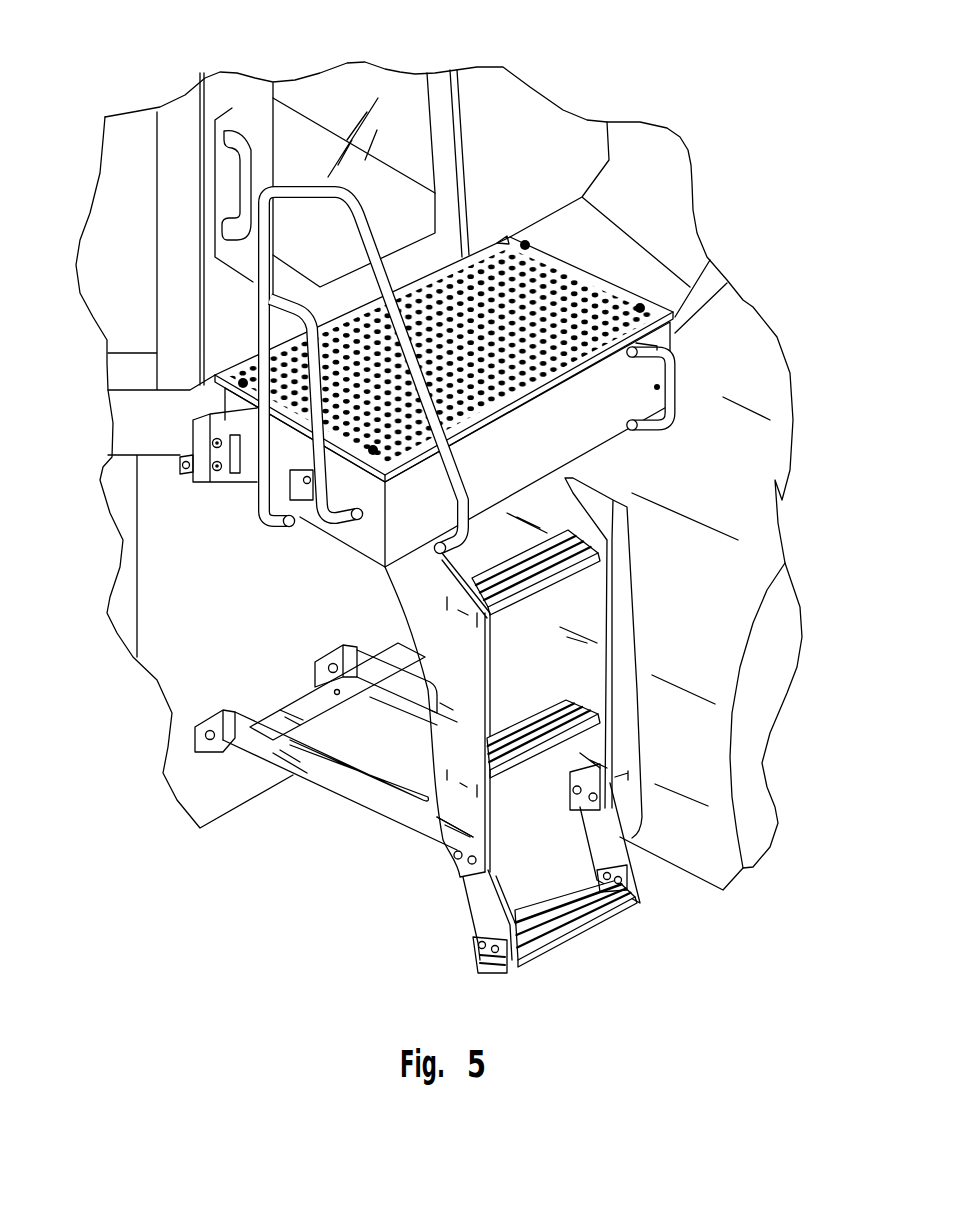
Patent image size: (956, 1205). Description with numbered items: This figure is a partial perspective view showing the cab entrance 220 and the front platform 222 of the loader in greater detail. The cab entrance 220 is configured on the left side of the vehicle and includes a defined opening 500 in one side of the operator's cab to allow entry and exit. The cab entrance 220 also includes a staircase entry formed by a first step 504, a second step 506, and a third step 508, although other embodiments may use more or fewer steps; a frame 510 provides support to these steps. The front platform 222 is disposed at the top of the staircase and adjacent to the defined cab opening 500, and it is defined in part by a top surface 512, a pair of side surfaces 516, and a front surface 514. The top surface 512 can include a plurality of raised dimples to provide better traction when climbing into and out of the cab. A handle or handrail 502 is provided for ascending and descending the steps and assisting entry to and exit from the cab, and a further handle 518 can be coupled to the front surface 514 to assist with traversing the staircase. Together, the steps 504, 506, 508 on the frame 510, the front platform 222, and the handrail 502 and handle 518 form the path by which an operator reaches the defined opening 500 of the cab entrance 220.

The defined opening 500 is at (415, 226).
The handrail 502 is at (262, 332).
The first step 504 is at (583, 930).
The second step 506 is at (528, 763).
The third step 508 is at (527, 590).
The frame 510 is at (380, 798).
The top surface 512 is at (605, 290).
The front surface 514 is at (600, 437).
The side surfaces 516 is at (350, 538).
The handle 518 is at (673, 397).
The cab entrance 220 is at (617, 652).
The front platform 222 is at (192, 427).